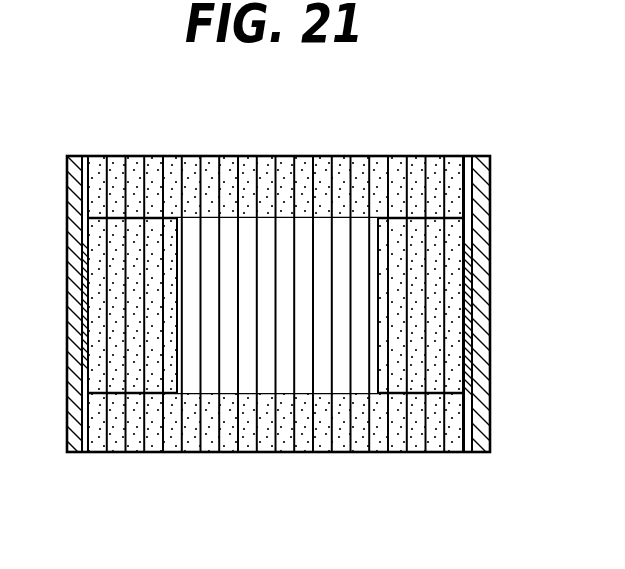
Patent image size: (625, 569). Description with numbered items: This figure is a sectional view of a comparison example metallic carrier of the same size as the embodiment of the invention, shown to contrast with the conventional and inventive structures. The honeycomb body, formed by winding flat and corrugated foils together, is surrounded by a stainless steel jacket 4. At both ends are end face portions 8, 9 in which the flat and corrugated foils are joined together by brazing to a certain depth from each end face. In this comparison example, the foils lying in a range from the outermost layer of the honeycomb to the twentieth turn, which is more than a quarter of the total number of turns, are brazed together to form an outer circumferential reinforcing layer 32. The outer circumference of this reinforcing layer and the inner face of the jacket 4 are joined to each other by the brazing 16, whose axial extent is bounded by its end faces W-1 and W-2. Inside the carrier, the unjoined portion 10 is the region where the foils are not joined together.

The jacket 4 is at (73, 200).
The end face portion 8 is at (318, 172).
The end face portion 9 is at (303, 432).
The unjoined portion 10 is at (245, 260).
The brazing 16 is at (77, 278).
The outer circumferential reinforcing layer 32 is at (125, 257).
The end face of brazing W-1 is at (475, 248).
The end face of brazing W-2 is at (479, 380).